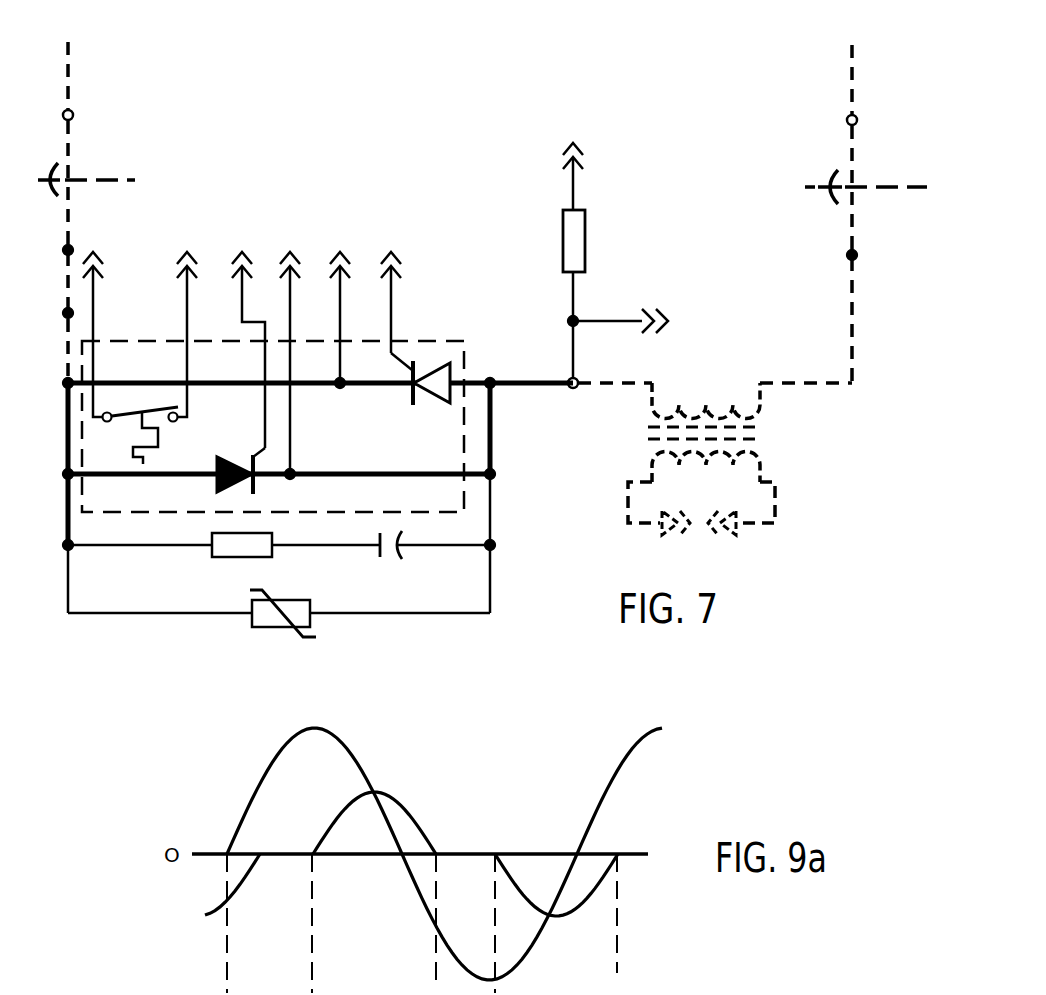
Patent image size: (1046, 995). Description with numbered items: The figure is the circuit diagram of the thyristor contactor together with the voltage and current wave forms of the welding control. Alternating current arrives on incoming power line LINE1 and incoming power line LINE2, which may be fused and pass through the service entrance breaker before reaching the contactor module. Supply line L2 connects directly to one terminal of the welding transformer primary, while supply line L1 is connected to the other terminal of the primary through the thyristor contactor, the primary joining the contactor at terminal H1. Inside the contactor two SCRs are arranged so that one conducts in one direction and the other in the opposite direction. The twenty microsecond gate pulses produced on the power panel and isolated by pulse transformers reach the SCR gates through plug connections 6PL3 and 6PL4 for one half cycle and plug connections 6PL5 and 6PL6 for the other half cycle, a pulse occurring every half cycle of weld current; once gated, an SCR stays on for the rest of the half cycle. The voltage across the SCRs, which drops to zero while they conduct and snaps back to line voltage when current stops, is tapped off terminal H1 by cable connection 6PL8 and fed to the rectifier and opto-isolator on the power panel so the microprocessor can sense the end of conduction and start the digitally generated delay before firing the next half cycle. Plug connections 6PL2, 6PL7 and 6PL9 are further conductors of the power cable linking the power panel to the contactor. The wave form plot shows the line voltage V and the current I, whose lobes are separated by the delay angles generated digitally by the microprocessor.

In FIG. 7, the incoming power line LINE1 is at (86, 195).
In FIG. 7, the incoming power line LINE2 is at (866, 196).
In FIG. 7, the power supply line L1 is at (264, 449).
In FIG. 7, the power supply line L2 is at (806, 367).
In FIG. 7, the terminal H1 of the thyristor contactor H1 is at (555, 330).
In FIG. 7, the plug connection of power cable 6PL 6PL2 is at (93, 303).
In FIG. 7, the plug connection 6PL3 is at (391, 271).
In FIG. 7, the plug connection 6PL4 is at (340, 289).
In FIG. 7, the plug connection 6PL5 is at (247, 319).
In FIG. 7, the plug connection 6PL6 is at (290, 335).
In FIG. 7, the plug connection of power cable 6PL 6PL7 is at (187, 303).
In FIG. 7, the cable connection 6PL8 is at (653, 325).
In FIG. 7, the plug connection of power cable 6PL 6PL9 is at (573, 173).
In FIG. 9A, the voltage wave form V is at (266, 774).
In FIG. 9A, the current wave form I is at (335, 823).